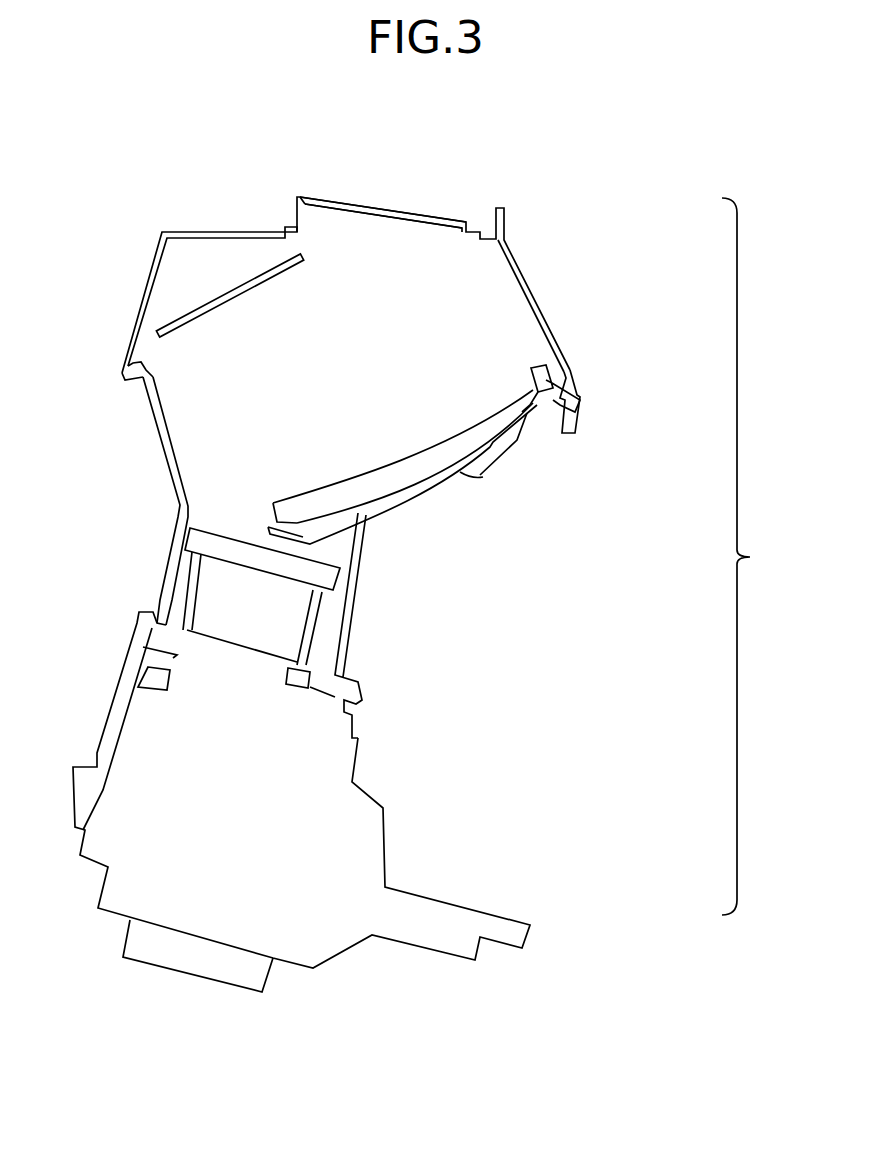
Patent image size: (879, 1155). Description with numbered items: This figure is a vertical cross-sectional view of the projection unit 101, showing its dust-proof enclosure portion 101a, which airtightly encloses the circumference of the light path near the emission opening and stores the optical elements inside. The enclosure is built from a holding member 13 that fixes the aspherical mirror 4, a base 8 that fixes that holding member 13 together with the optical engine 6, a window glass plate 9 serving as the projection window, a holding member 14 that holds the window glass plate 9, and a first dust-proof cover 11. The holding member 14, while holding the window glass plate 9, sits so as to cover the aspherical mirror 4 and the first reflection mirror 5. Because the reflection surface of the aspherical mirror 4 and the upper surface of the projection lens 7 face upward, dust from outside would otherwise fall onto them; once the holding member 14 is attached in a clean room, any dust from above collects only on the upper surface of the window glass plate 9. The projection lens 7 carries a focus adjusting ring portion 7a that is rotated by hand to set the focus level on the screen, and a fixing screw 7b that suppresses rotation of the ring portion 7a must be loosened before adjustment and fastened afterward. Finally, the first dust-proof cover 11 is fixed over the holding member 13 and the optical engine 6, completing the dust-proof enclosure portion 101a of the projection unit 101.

The projection unit 101 is at (273, 121).
The dust-proof enclosure portion 101a is at (764, 556).
The aspherical mirror 4 is at (523, 392).
The first reflection mirror 5 is at (215, 297).
The optical engine 6 is at (323, 842).
The projection lens 7 is at (215, 547).
The focus adjusting ring portion 7a is at (293, 610).
The fixing screw 7b is at (312, 675).
The base 8 is at (165, 450).
The window glass plate 9 is at (383, 203).
The first dust-proof cover 11 is at (363, 682).
The holding member 13 is at (483, 477).
The holding member 14 is at (533, 285).